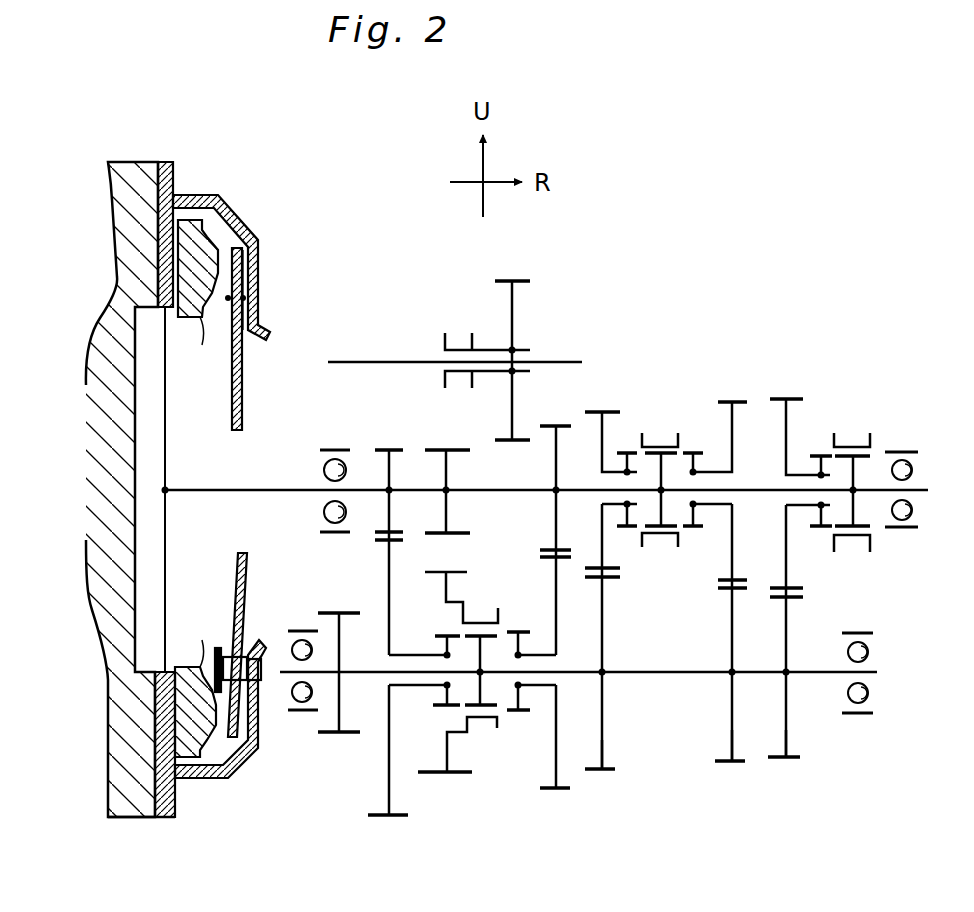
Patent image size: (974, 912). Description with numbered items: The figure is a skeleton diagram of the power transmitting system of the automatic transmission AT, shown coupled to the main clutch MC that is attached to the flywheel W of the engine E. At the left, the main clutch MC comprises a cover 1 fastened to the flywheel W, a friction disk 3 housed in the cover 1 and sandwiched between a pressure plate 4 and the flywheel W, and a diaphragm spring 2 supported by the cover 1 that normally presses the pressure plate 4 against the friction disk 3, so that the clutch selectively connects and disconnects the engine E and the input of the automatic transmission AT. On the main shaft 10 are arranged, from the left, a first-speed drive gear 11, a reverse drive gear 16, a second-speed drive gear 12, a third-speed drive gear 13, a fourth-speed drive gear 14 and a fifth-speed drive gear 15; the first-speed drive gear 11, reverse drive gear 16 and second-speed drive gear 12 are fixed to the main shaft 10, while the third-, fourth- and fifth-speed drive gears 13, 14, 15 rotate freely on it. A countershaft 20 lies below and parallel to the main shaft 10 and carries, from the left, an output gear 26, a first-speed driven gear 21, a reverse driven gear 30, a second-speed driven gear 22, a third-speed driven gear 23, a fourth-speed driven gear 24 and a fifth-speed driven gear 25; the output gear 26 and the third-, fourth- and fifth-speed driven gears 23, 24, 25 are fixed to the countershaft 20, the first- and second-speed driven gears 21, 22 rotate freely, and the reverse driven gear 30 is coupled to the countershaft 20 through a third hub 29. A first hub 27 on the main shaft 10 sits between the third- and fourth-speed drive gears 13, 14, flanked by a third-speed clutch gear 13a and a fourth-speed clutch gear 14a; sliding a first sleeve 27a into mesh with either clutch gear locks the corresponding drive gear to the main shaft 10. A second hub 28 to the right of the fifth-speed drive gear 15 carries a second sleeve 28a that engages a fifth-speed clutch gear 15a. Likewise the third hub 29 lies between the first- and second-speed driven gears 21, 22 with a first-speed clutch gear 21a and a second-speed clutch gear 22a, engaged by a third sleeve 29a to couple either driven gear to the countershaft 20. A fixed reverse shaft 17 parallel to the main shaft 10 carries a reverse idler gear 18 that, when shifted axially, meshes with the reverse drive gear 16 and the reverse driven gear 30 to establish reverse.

The cover 1 is at (262, 244).
The diaphragm spring 2 is at (247, 370).
The friction disk 3 is at (166, 280).
The pressure plate 4 is at (190, 318).
The main shaft 10 is at (250, 494).
The first-speed drive gear 11 is at (388, 448).
The second-speed drive gear 12 is at (558, 424).
The third-speed drive gear 13 is at (598, 410).
The third-speed clutch gear 13a is at (629, 530).
The fourth-speed drive gear 14 is at (729, 400).
The fourth-speed clutch gear 14a is at (694, 530).
The fifth-speed drive gear 15 is at (790, 397).
The fifth-speed clutch gear 15a is at (822, 530).
The reverse drive gear 16 is at (446, 448).
The reverse shaft 17 is at (352, 360).
The reverse idler gear 18 is at (515, 283).
The countershaft 20 is at (676, 675).
The first-speed driven gear 21 is at (394, 818).
The first-speed clutch gear 21a is at (437, 712).
The second-speed driven gear 22 is at (556, 790).
The second-speed clutch gear 22a is at (520, 713).
The third-speed driven gear 23 is at (596, 772).
The fourth-speed driven gear 24 is at (724, 764).
The fifth-speed driven gear 25 is at (786, 760).
The output gear 26 is at (335, 735).
The first hub 27 is at (662, 476).
The first sleeve 27a is at (660, 446).
The second hub 28 is at (856, 476).
The second sleeve 28a is at (852, 446).
The third hub 29 is at (478, 655).
The third sleeve 29a is at (480, 620).
The reverse driven gear 30 is at (445, 774).
The flywheel W is at (126, 770).
The engine E is at (115, 828).
The main clutch MC is at (252, 200).
The automatic transmission AT is at (698, 278).